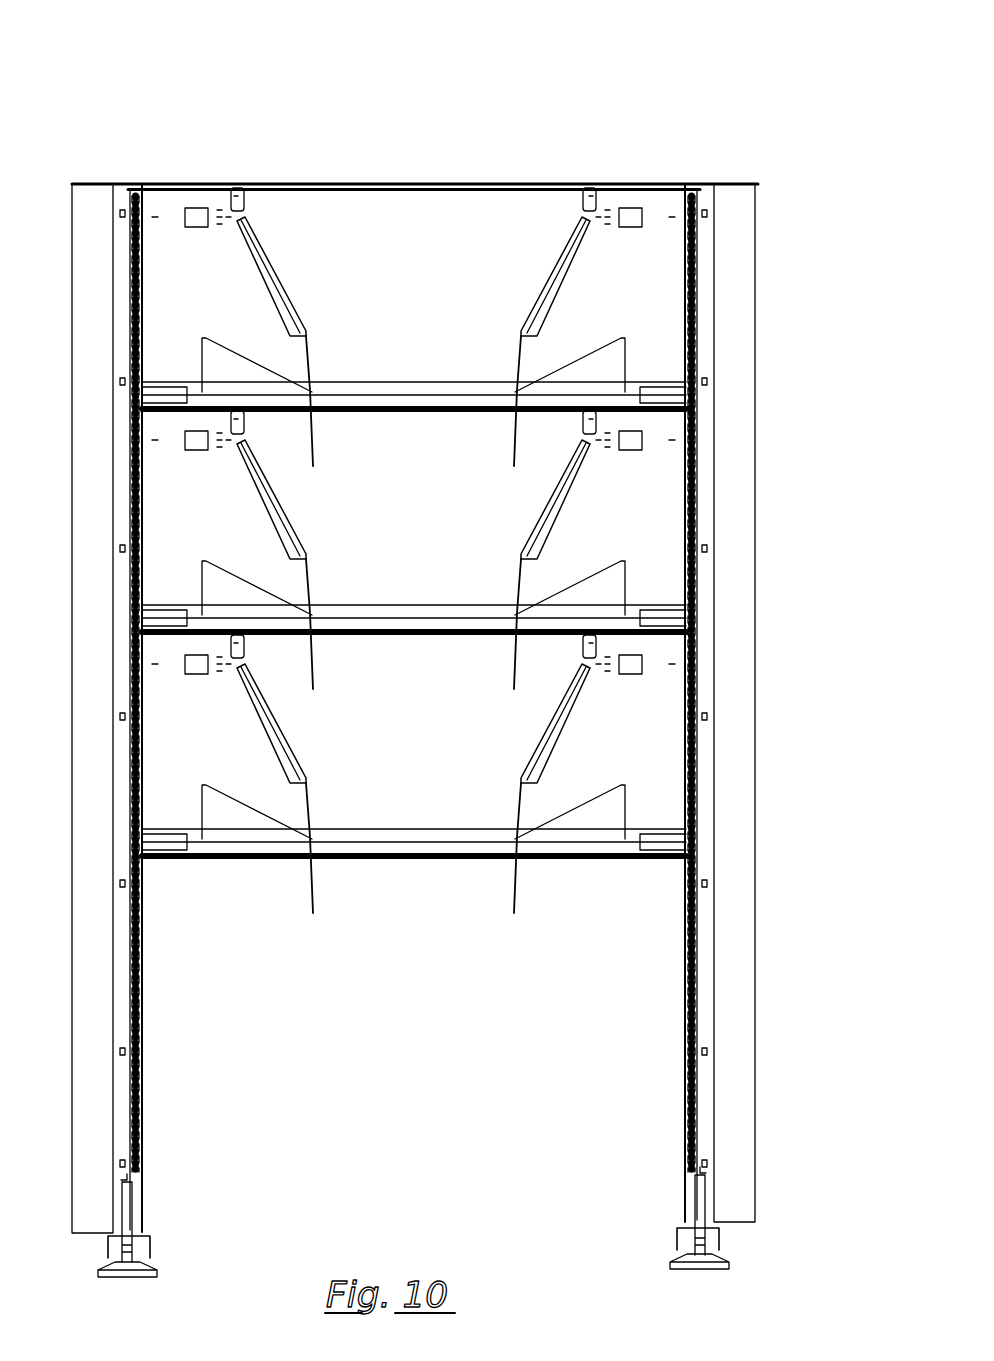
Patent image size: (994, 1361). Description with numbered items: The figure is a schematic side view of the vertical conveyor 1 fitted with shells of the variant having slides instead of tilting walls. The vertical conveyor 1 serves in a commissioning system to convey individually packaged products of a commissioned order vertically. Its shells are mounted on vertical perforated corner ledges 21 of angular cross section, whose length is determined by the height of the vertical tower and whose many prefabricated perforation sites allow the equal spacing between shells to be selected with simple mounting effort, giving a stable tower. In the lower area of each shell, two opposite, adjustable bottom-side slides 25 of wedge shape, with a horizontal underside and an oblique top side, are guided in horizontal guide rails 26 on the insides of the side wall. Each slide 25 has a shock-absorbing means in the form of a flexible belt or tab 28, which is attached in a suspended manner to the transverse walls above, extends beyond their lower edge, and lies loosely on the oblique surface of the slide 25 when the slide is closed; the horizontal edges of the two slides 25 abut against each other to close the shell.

The vertical conveyor 1 is at (696, 150).
The corner ledge 21 is at (84, 197).
The slide 25 is at (223, 823).
The guide rail 26 is at (410, 843).
The belt or tab 28 is at (317, 908).